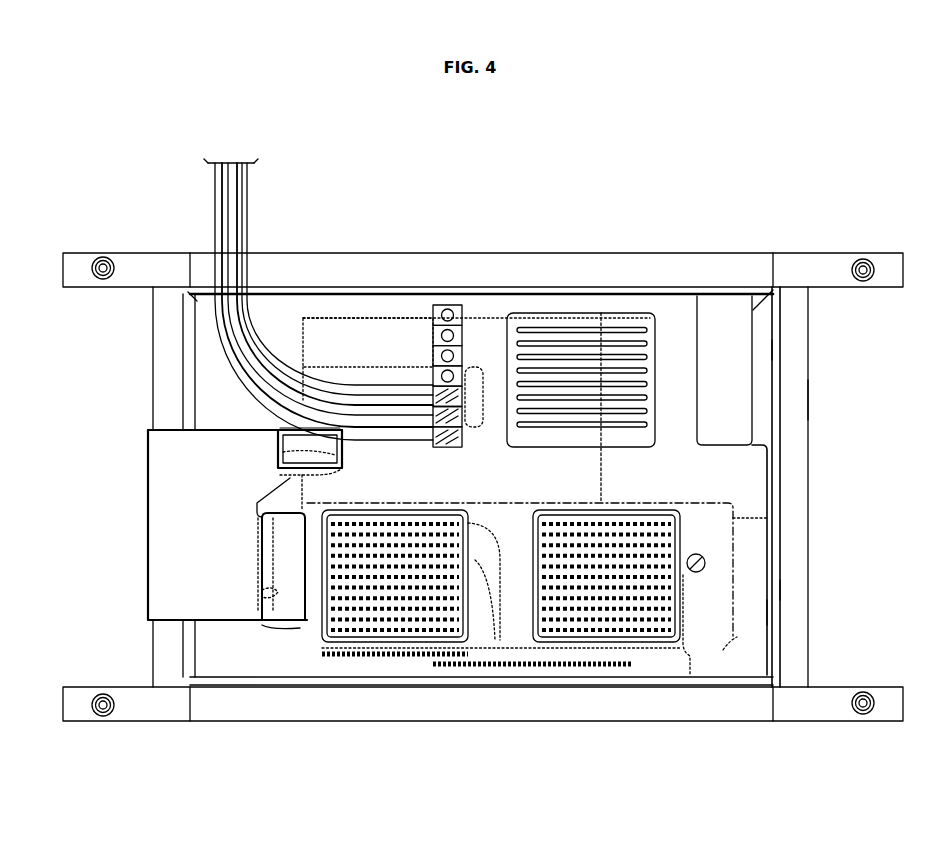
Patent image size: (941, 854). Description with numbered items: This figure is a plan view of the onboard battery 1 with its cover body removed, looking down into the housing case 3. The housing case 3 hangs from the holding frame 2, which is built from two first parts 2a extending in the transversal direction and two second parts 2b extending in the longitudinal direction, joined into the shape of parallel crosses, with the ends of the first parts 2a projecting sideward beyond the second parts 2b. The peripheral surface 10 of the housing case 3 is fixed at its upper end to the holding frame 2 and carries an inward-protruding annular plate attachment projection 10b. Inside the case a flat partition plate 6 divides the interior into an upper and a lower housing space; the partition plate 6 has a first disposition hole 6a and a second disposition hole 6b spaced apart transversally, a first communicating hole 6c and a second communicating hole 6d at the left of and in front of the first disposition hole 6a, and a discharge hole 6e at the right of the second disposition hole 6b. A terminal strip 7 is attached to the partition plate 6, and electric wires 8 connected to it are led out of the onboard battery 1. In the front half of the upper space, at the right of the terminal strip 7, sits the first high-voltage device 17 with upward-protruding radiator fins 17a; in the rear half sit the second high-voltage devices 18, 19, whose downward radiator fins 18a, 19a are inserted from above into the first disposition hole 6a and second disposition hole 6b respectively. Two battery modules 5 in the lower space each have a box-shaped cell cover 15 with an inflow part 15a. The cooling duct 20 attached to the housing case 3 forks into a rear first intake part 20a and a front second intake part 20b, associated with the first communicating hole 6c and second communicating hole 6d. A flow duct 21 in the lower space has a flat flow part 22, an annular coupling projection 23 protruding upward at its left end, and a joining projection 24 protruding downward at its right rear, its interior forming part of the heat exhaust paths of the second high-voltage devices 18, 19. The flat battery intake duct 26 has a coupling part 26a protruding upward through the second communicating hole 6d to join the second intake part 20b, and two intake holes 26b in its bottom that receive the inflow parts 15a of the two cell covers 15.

The onboard battery 1 is at (868, 178).
The holding frame 2 is at (728, 268).
The first parts 2a is at (880, 262).
The second parts 2b is at (158, 318).
The housing case 3 is at (808, 395).
The battery modules 5 is at (345, 292).
The partition plate 6 is at (755, 440).
The first disposition hole 6a is at (345, 660).
The second disposition hole 6b is at (648, 650).
The first communicating hole 6c is at (262, 590).
The second communicating hole 6d is at (280, 452).
The discharge hole 6e is at (705, 565).
The terminal strip 7 is at (468, 368).
The electric wires 8 is at (232, 162).
The peripheral surface 10 is at (780, 590).
The plate attachment projection 10b is at (795, 350).
The cell cover 15 is at (368, 316).
The inflow part 15a is at (447, 328).
The first high-voltage device 17 is at (607, 298).
The radiator fins 17a is at (630, 330).
The second high-voltage device 18 is at (312, 648).
The radiator fins 18a is at (392, 648).
The second high-voltage device 19 is at (681, 648).
The radiator fins 19a is at (645, 650).
The cooling duct 20 is at (162, 522).
The first intake part 20a is at (306, 624).
The second intake part 20b is at (280, 428).
The flow duct 21 is at (770, 612).
The flow part 22 is at (768, 520).
The coupling projection 23 is at (295, 626).
The joining projection 24 is at (740, 660).
The battery intake duct 26 is at (318, 318).
The coupling part 26a is at (283, 415).
The intake holes 26b is at (447, 384).